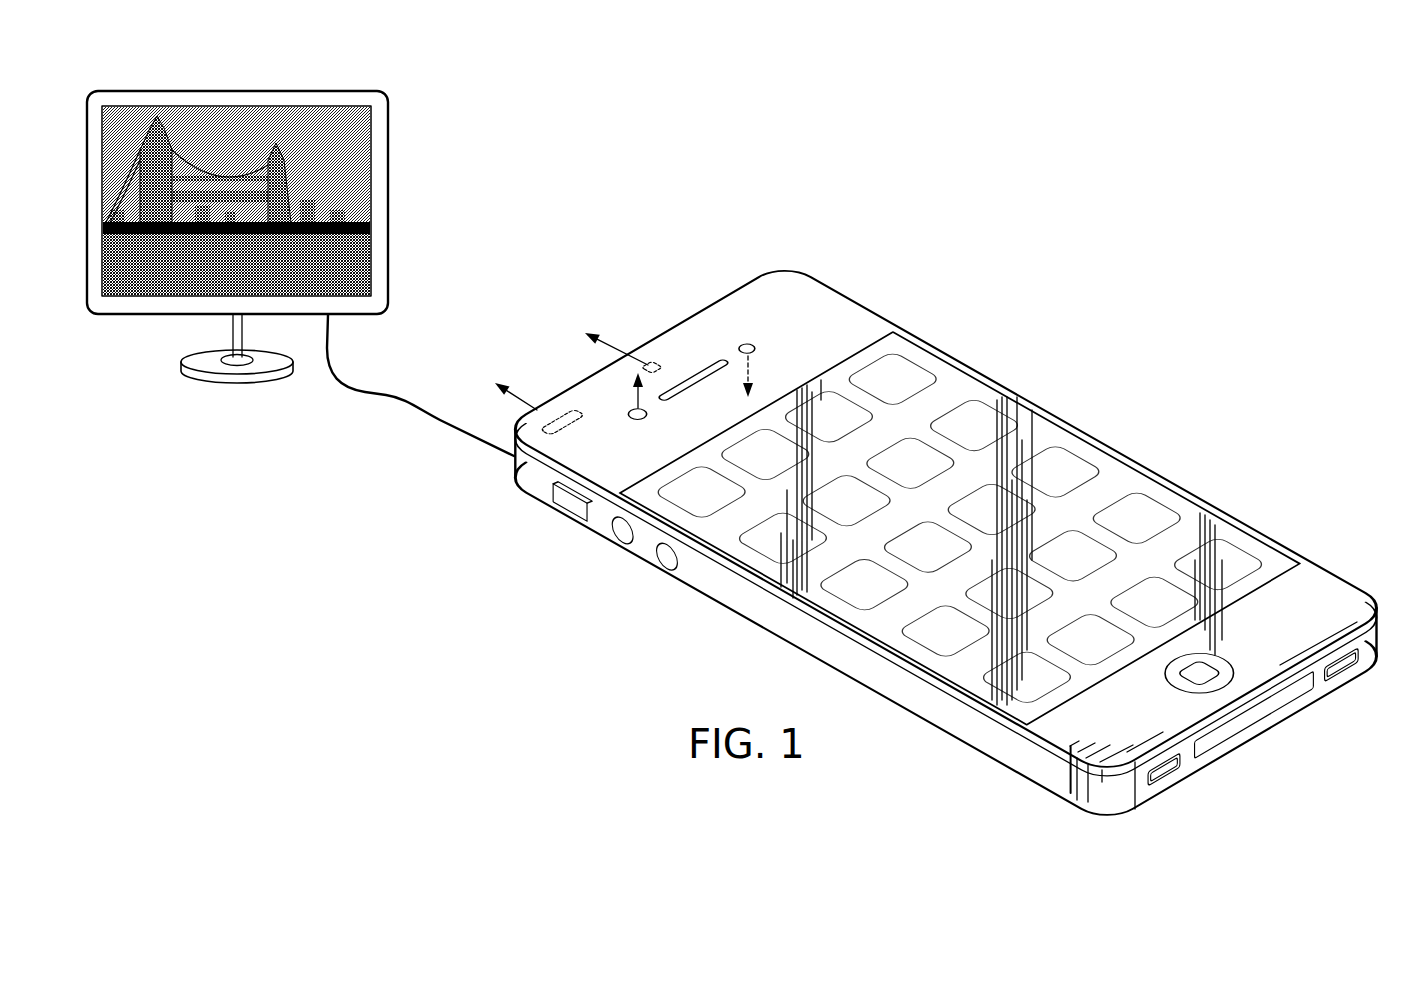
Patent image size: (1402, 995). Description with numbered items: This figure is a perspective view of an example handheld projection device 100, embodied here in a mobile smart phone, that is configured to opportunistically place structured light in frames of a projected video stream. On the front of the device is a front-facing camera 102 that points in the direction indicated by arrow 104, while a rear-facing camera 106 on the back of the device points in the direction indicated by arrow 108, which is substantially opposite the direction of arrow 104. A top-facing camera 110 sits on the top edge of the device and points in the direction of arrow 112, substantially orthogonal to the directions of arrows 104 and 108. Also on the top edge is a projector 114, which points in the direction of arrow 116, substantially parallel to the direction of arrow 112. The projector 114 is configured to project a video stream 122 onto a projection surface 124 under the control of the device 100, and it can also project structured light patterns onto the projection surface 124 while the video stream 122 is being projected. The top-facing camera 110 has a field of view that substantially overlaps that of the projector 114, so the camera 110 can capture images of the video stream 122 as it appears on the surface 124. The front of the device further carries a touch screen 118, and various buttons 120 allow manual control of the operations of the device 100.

The handheld projection device 100 is at (1061, 420).
The front-facing camera 102 is at (648, 413).
The arrow 104 is at (632, 412).
The rear-facing camera 106 is at (752, 344).
The arrow 108 is at (757, 358).
The top-facing camera 110 is at (650, 360).
The arrow 112 is at (606, 344).
The projector 114 is at (560, 410).
The arrow 116 is at (518, 401).
The touch screen 118 is at (1115, 490).
The buttons 120 is at (566, 518).
The video stream 122 is at (145, 115).
The projection surface 124 is at (236, 90).